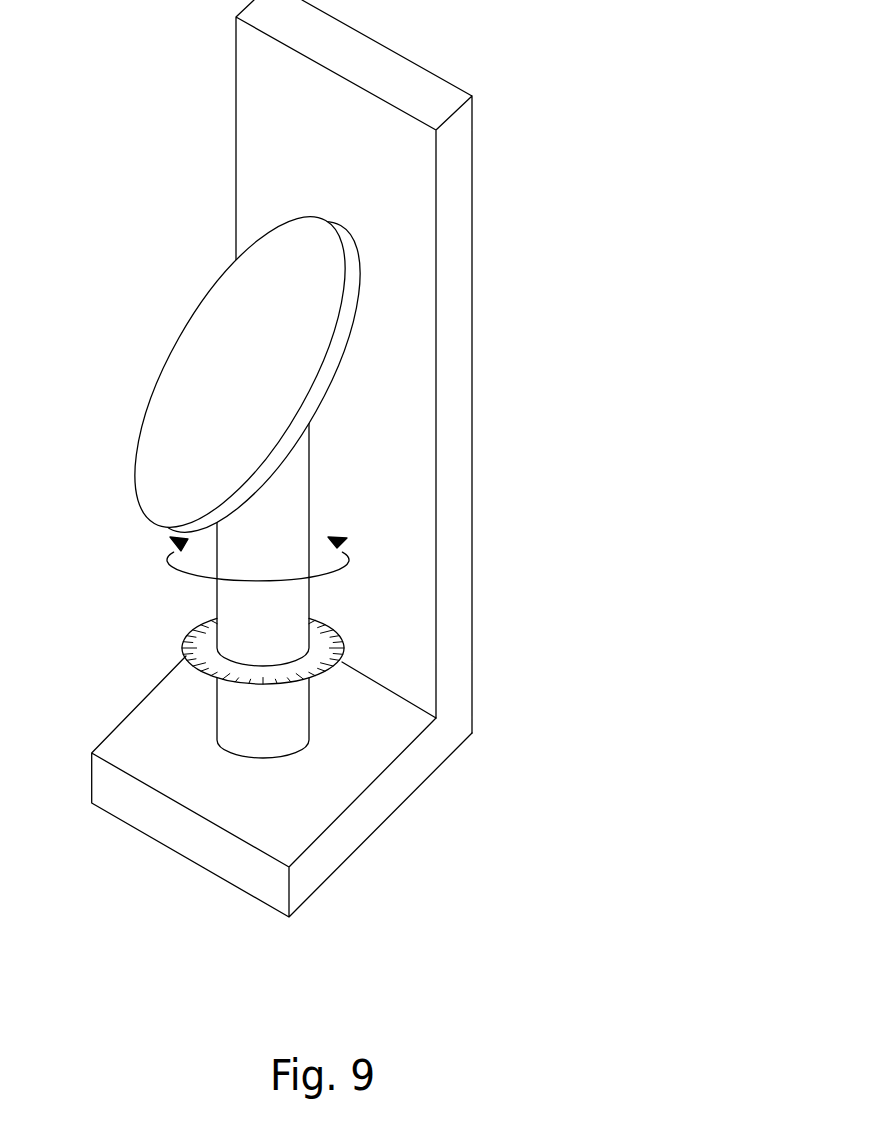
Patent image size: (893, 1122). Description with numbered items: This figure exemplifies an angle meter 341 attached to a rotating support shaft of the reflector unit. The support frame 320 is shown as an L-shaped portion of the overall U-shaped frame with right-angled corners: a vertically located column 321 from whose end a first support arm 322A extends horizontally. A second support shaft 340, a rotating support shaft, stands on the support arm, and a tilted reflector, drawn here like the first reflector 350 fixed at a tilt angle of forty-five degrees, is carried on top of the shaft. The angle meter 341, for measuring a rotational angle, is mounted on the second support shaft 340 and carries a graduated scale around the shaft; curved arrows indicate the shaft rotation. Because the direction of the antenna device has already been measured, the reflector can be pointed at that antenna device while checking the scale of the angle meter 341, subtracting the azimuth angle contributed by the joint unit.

The support frame 320 is at (330, 458).
The column 321 is at (450, 305).
The first support arm 322A is at (380, 810).
The second support shaft 340 is at (232, 598).
The angle meter 341 is at (183, 637).
The first reflector 350 is at (192, 350).